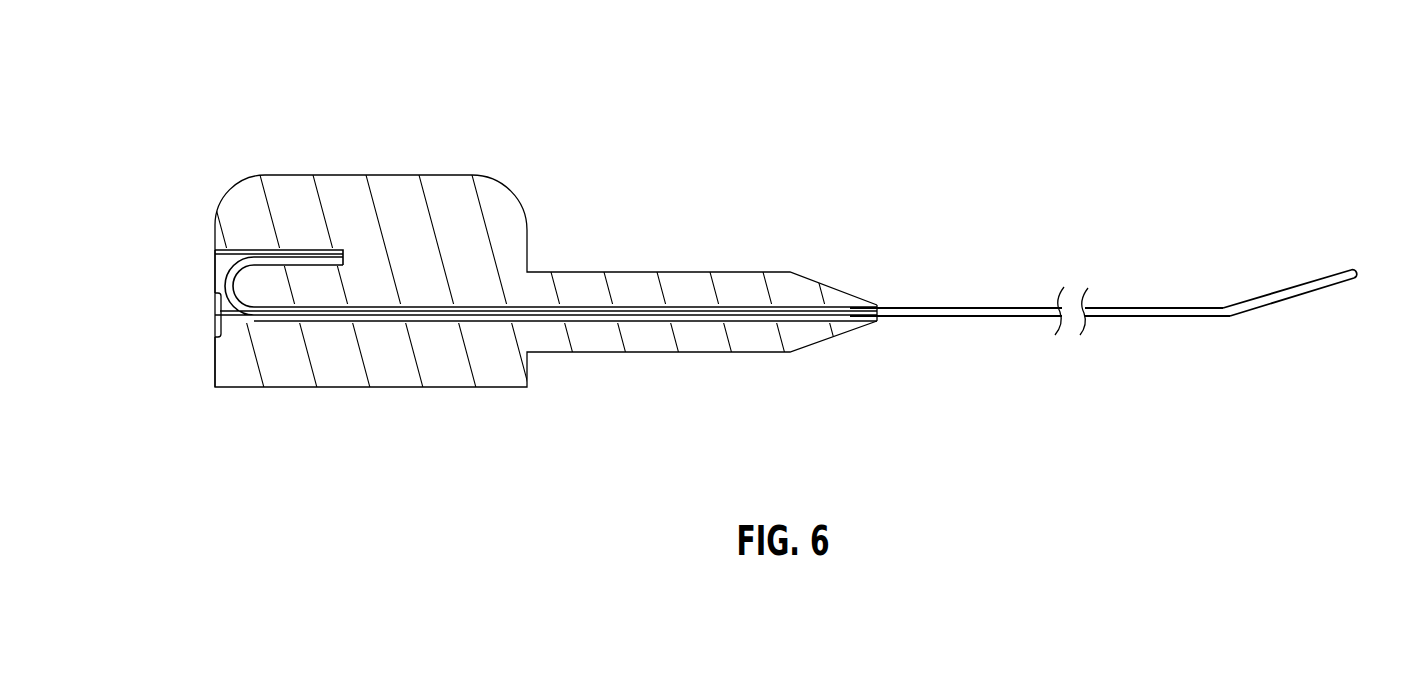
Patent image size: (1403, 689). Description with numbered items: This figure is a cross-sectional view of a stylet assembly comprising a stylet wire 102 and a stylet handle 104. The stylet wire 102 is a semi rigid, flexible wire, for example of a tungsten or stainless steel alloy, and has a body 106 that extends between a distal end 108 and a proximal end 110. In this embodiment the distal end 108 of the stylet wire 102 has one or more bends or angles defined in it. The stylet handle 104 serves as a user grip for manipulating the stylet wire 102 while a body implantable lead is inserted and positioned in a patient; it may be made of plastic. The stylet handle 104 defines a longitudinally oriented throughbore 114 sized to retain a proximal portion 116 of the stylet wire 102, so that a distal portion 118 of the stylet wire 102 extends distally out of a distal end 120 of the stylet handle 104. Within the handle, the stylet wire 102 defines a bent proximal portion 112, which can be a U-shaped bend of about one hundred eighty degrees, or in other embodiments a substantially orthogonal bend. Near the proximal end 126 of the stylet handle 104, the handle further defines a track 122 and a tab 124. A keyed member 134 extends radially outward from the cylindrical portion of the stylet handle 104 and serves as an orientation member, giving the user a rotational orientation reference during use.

The stylet wire 102 is at (1162, 305).
The stylet handle 104 is at (560, 278).
The body 106 is at (729, 322).
The distal end 108 is at (1357, 278).
The proximal end 110 is at (345, 257).
The bent proximal portion 112 is at (225, 318).
The throughbore 114 is at (635, 305).
The proximal portion 116 is at (952, 306).
The distal portion 118 is at (528, 323).
The distal end 120 is at (875, 321).
The track 122 is at (214, 268).
The tab 124 is at (212, 312).
The proximal end 126 is at (210, 353).
The keyed member 134 is at (288, 195).